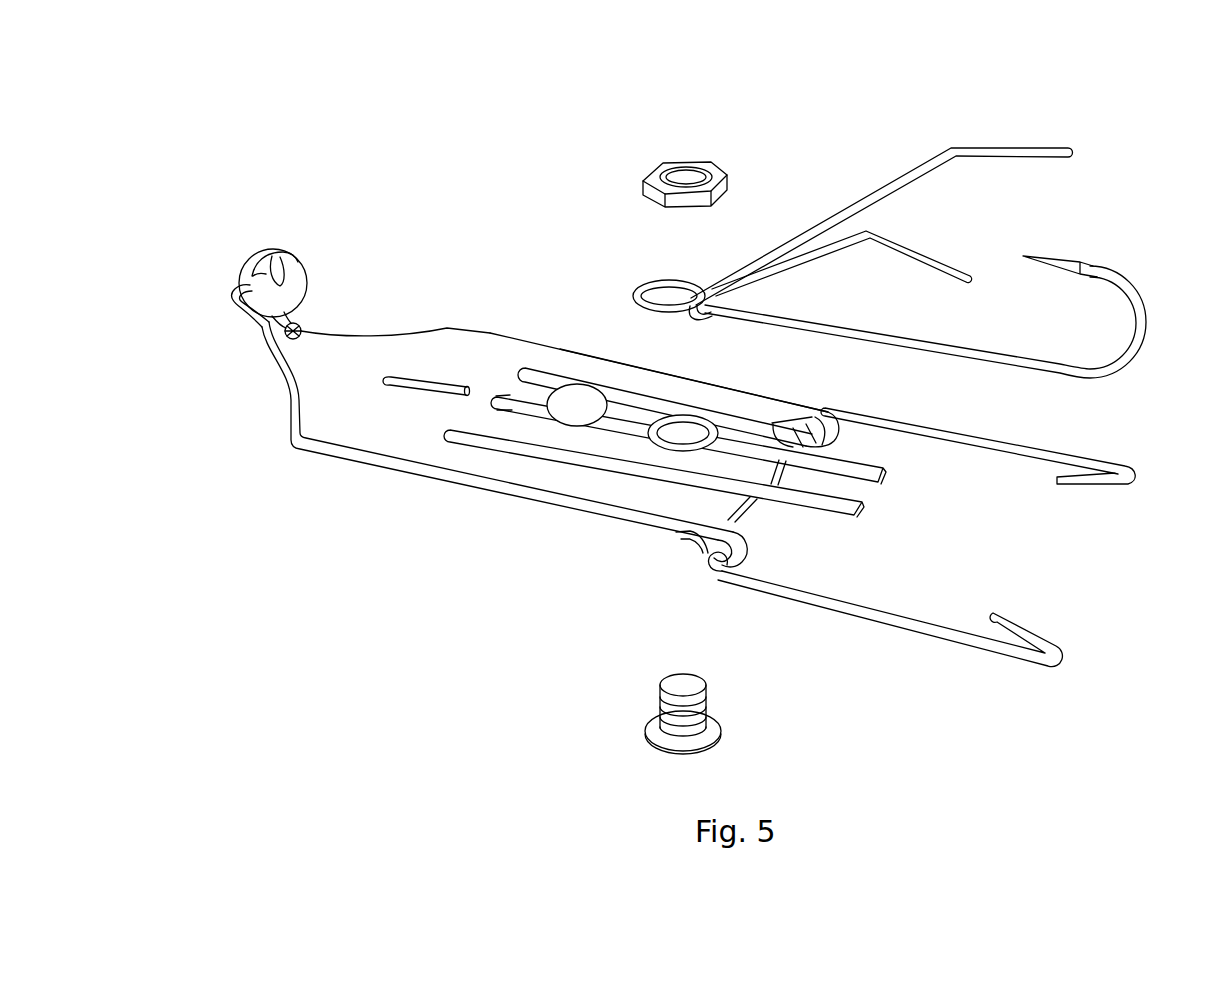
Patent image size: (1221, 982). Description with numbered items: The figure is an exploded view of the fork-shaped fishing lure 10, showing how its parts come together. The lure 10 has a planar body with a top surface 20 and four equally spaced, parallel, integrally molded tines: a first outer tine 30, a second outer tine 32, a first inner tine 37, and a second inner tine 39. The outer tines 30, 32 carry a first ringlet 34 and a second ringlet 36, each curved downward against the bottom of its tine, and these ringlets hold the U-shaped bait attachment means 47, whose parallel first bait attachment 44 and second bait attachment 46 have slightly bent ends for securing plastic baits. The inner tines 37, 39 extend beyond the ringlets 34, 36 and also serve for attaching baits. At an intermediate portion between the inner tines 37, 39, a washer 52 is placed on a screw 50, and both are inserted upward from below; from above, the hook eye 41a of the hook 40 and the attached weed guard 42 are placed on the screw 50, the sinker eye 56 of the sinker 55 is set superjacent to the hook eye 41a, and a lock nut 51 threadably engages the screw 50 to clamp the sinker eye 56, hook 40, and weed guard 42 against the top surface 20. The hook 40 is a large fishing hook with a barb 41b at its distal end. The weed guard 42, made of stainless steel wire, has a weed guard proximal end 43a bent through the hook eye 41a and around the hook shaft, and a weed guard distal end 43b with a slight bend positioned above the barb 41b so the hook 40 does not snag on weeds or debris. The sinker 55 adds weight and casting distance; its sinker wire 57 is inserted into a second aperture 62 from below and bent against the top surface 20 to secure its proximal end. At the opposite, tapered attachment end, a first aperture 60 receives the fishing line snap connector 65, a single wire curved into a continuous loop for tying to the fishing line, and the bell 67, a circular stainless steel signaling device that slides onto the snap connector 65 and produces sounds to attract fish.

The fork-shaped fishing lure 10 is at (274, 151).
The top surface 20 is at (345, 405).
The first outer tine 30 is at (565, 487).
The second outer tine 32 is at (698, 387).
The first ringlet 34 is at (709, 562).
The second ringlet 36 is at (818, 437).
The first inner tine 37 is at (855, 512).
The second inner tine 39 is at (870, 470).
The hook 40 is at (1140, 332).
The hook eye 41a is at (636, 299).
The barb 41b is at (1082, 262).
The weed guard 42 is at (823, 202).
The weed guard proximal end 43a is at (716, 298).
The weed guard distal end 43b is at (938, 262).
The first bait attachment 44 is at (1058, 669).
The second bait attachment 46 is at (1093, 483).
The bait attachment means 47 is at (747, 514).
The screw 50 is at (690, 686).
The lock nut 51 is at (651, 190).
The washer 52 is at (653, 735).
The sinker 55 is at (568, 405).
The sinker eye 56 is at (668, 446).
The sinker wire 57 is at (520, 395).
The first aperture 60 is at (300, 324).
The second aperture 62 is at (383, 380).
The fishing line snap connector 65 is at (236, 289).
The bell 67 is at (291, 283).